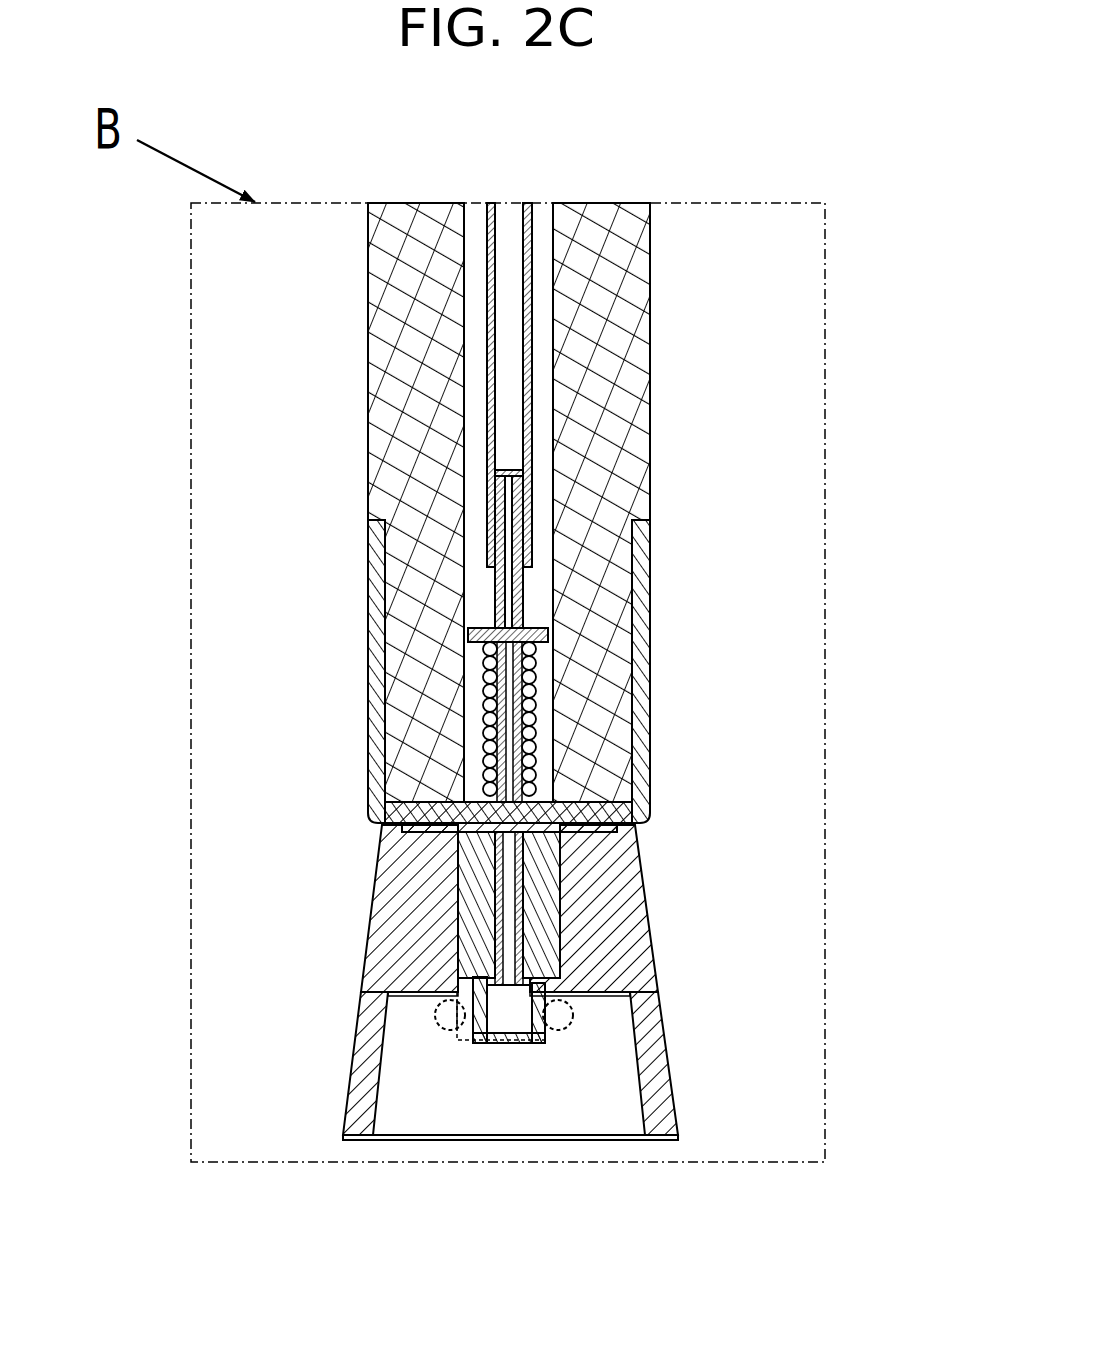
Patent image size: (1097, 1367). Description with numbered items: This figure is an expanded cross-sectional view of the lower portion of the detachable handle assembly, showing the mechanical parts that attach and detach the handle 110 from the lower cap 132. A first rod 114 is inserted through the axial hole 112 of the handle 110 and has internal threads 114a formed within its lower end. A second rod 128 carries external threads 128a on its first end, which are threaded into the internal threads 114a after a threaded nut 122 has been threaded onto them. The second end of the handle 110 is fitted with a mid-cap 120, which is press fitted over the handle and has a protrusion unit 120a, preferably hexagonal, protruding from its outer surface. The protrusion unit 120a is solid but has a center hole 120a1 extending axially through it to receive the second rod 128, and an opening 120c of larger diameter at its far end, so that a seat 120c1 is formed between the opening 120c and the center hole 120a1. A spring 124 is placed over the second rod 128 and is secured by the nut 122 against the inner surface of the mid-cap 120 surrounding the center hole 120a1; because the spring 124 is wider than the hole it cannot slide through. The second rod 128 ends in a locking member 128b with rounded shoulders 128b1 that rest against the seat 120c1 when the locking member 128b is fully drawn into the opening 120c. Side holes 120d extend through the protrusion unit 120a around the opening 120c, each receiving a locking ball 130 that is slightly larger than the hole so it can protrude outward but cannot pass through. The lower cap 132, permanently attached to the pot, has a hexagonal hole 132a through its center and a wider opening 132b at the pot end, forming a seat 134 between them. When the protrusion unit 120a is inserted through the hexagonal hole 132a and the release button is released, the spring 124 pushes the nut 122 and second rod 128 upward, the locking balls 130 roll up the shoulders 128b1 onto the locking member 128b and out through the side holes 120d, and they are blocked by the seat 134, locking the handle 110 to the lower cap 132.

The detachable handle 110 is at (641, 330).
The axial hole 112 is at (465, 377).
The first rod 114 is at (531, 418).
The internal threads 114a is at (710, 524).
The mid-cap 120 is at (368, 617).
The protrusion unit 120a is at (560, 888).
The center hole 120a1 is at (522, 945).
The opening 120c is at (547, 1045).
The seat 120c1 is at (478, 985).
The side holes 120d is at (455, 1038).
The threaded nut 122 is at (548, 632).
The spring 124 is at (535, 738).
The second rod 128 is at (706, 611).
The external threads 128a is at (523, 600).
The locking member 128b is at (656, 1124).
The rounded shoulder 128b1 is at (540, 985).
The locking balls 130 is at (436, 1018).
The lower cap 132 is at (285, 1035).
The hexagonal hole 132a is at (455, 932).
The opening 132b is at (378, 1113).
The seat 134 is at (418, 995).